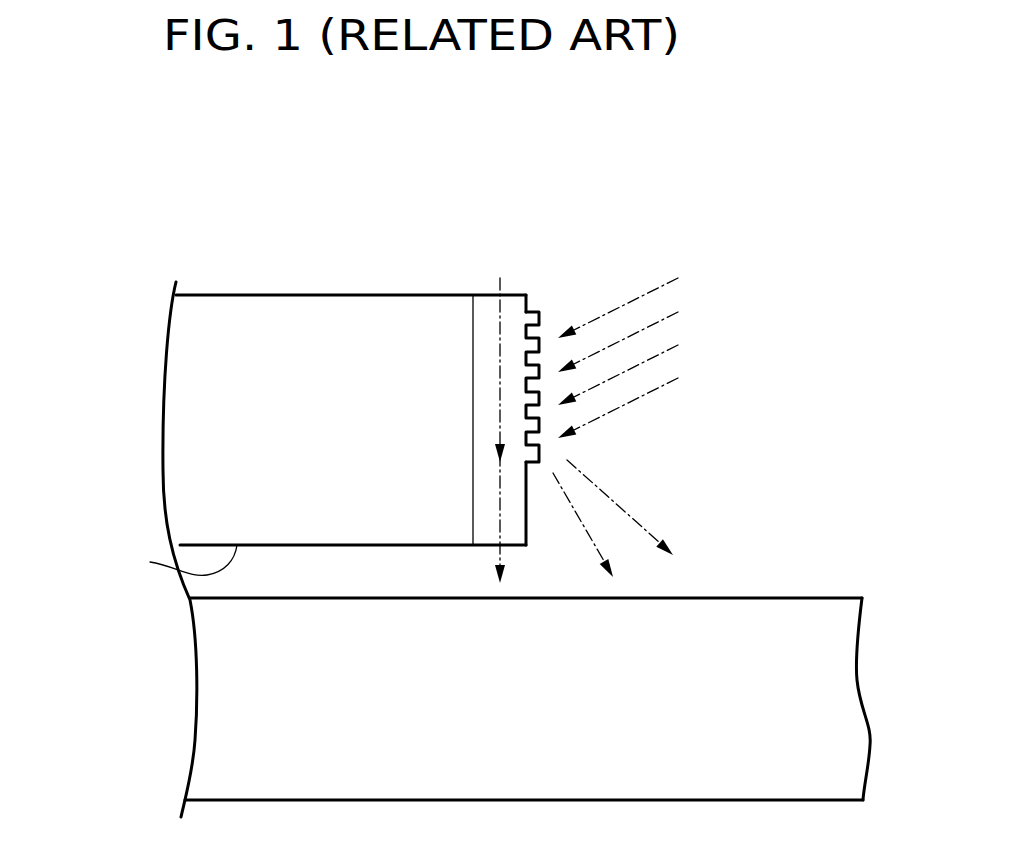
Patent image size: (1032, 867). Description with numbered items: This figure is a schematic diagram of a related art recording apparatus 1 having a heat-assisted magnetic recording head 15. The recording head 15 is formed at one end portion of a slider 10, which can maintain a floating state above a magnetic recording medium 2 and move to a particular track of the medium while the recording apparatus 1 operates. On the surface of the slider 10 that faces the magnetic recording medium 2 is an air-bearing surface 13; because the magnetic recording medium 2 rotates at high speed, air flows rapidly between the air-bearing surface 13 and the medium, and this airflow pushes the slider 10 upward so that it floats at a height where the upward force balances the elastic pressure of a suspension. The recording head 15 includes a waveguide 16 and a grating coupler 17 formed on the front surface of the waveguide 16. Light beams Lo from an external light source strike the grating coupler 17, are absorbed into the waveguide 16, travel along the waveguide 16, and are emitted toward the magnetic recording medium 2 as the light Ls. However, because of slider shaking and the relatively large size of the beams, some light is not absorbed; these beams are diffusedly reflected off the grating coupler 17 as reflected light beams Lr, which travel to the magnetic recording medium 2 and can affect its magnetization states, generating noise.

The recording apparatus 1 is at (287, 487).
The magnetic recording medium 2 is at (860, 743).
The slider 10 is at (267, 295).
The air-bearing surface 13 is at (150, 564).
The heat-assisted magnetic recording head 15 is at (515, 351).
The waveguide 16 is at (500, 295).
The grating coupler 17 is at (540, 305).
The light beams emitted toward the magnetic recording medium Ls is at (500, 512).
The light beams Lo is at (660, 387).
The diffusedly reflected light beams Lr is at (630, 515).